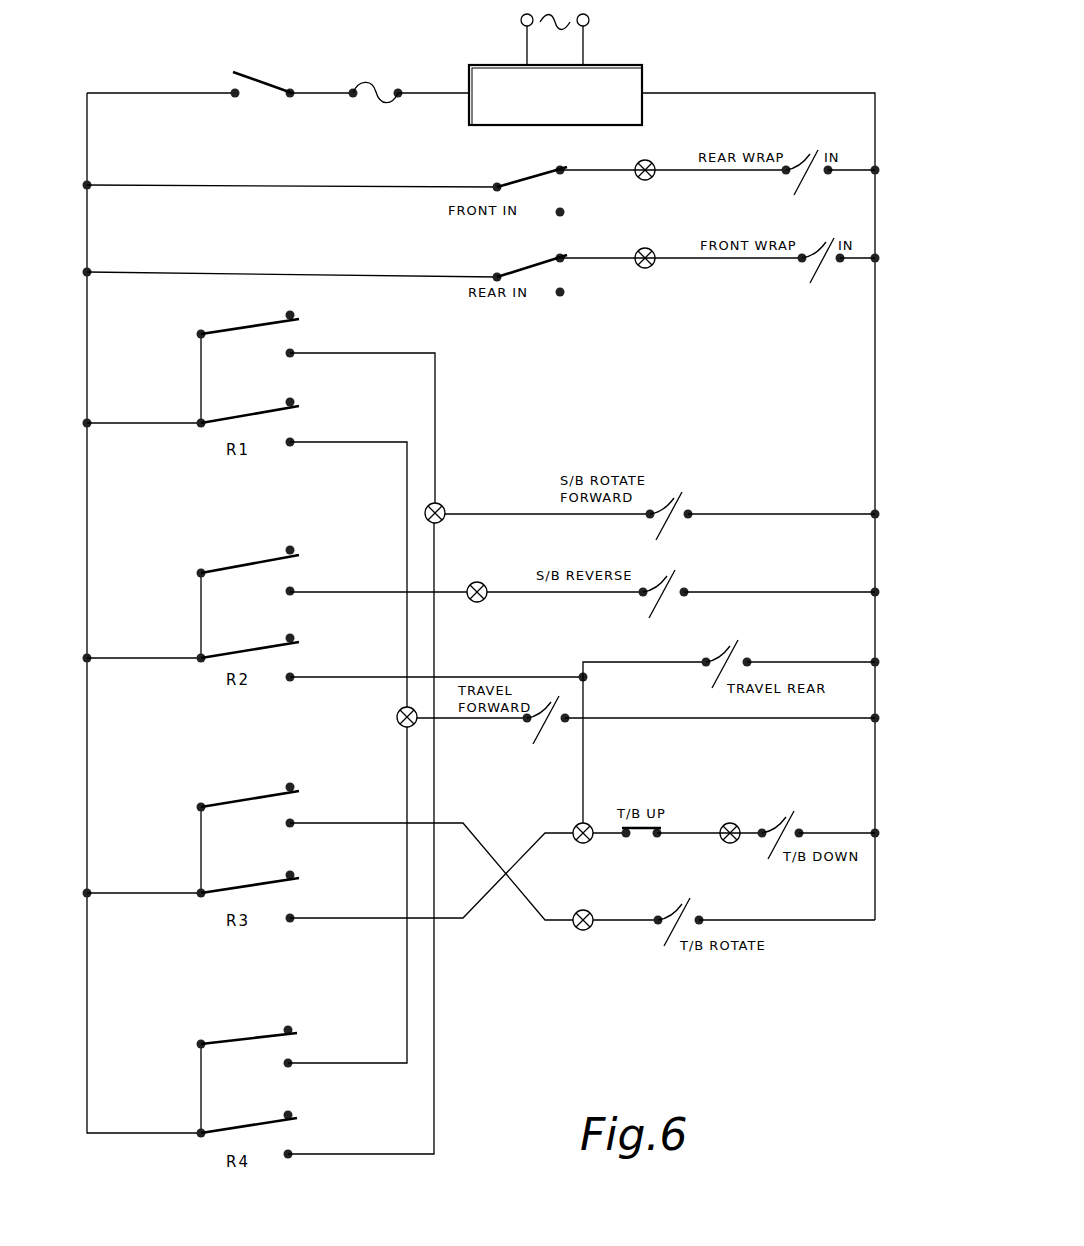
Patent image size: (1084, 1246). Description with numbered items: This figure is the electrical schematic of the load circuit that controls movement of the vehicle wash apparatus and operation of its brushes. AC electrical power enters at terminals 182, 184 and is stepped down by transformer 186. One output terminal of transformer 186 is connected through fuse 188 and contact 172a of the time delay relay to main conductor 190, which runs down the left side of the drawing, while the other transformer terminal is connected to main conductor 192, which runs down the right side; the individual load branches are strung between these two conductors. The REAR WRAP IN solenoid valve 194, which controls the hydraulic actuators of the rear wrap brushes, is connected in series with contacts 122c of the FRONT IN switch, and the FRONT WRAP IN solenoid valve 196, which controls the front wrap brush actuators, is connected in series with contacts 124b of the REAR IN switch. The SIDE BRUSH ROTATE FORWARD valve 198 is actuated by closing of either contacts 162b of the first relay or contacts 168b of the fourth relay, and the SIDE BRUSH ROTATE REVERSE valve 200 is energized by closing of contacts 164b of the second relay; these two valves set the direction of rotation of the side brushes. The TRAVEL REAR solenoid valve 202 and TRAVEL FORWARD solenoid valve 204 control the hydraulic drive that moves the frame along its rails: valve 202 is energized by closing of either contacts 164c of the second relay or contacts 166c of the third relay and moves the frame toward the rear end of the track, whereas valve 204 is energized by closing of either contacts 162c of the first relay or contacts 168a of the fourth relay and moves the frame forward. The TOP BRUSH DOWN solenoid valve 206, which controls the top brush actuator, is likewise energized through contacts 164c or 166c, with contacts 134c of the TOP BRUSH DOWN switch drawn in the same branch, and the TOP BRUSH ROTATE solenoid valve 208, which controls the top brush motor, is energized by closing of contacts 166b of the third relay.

The contacts of FRONT IN switch 122c is at (530, 182).
The contacts of REAR IN switch 124b is at (534, 272).
The contacts of TOP BRUSH DOWN switch 134c is at (642, 843).
The normally open contacts of first relay 162b is at (294, 333).
The normally open contacts of first relay 162c is at (294, 422).
The normally open contacts of second relay 164b is at (294, 572).
The normally open contacts of second relay 164c is at (300, 657).
The normally open contacts of third relay 166b is at (294, 806).
The normally open contacts of third relay 166c is at (296, 893).
The normally open contacts of fourth relay 168a is at (294, 1045).
The normally open contacts of fourth relay 168b is at (294, 1135).
The normally open contact of time delay relay 172a is at (268, 76).
The terminal 182 is at (521, 22).
The terminal 184 is at (589, 22).
The transformer 186 is at (644, 74).
The fuse 188 is at (382, 85).
The main conductor 190 is at (87, 330).
The main conductor 192 is at (877, 240).
The REAR WRAP IN solenoid valve 194 is at (800, 185).
The FRONT WRAP IN solenoid valve 196 is at (818, 273).
The SIDE BRUSH ROTATE FORWARD valve 198 is at (668, 528).
The SIDE BRUSH ROTATE REVERSE valve 200 is at (661, 606).
The TRAVEL REAR solenoid valve 202 is at (718, 652).
The TRAVEL FORWARD solenoid valve 204 is at (547, 732).
The TOP BRUSH DOWN solenoid valve 206 is at (780, 800).
The TOP BRUSH ROTATE solenoid valve 208 is at (676, 908).